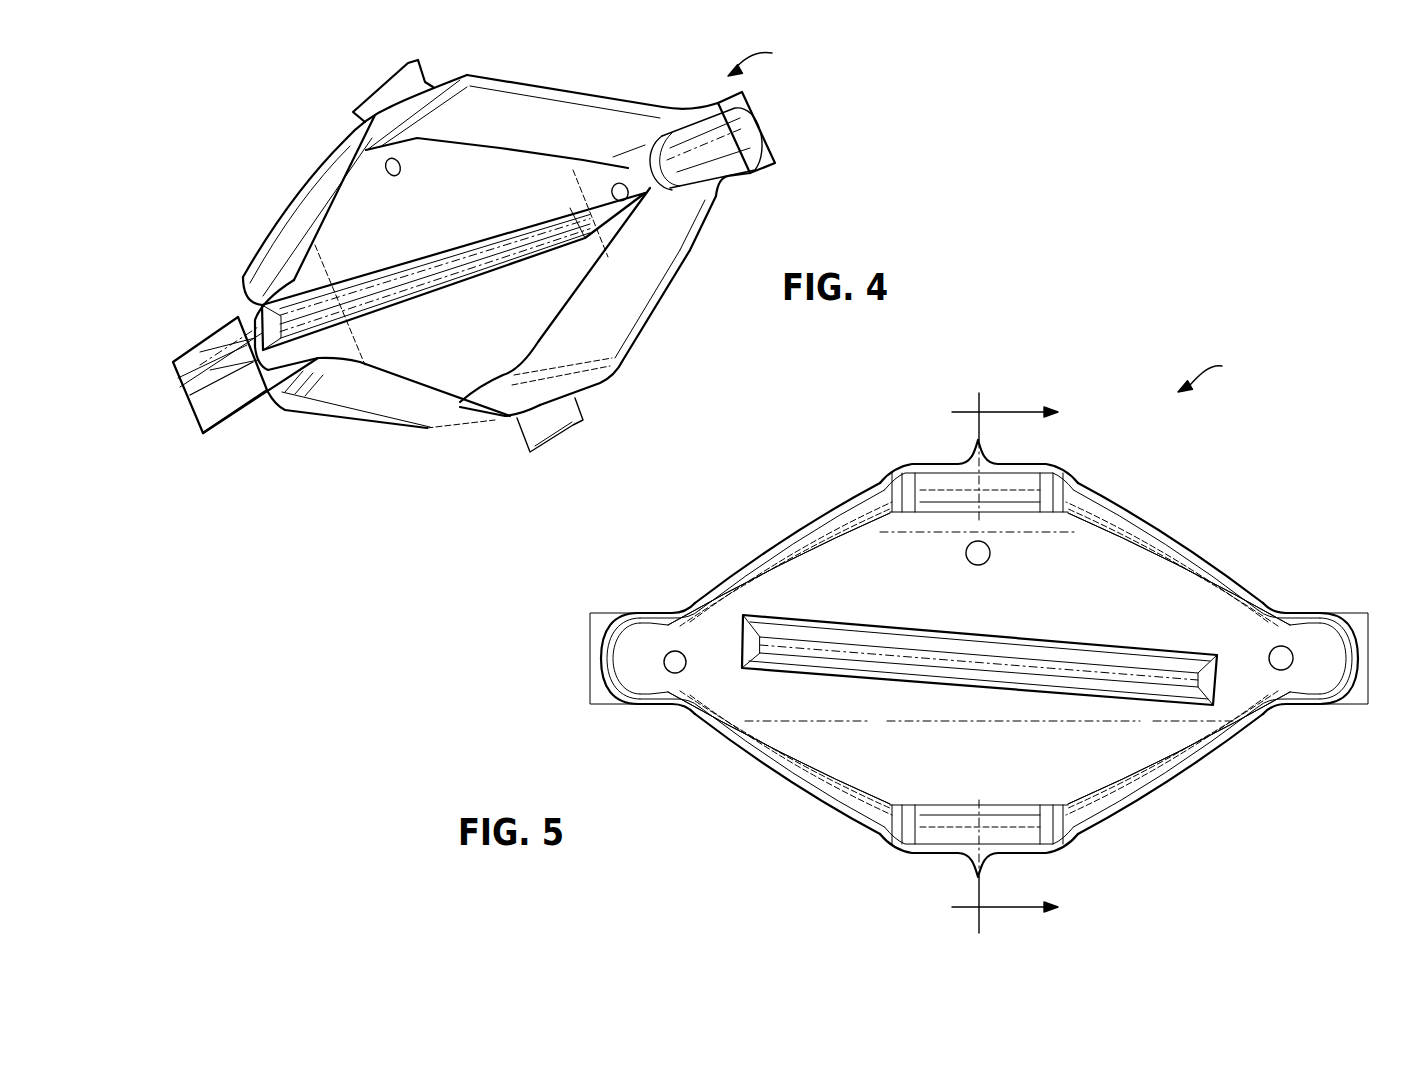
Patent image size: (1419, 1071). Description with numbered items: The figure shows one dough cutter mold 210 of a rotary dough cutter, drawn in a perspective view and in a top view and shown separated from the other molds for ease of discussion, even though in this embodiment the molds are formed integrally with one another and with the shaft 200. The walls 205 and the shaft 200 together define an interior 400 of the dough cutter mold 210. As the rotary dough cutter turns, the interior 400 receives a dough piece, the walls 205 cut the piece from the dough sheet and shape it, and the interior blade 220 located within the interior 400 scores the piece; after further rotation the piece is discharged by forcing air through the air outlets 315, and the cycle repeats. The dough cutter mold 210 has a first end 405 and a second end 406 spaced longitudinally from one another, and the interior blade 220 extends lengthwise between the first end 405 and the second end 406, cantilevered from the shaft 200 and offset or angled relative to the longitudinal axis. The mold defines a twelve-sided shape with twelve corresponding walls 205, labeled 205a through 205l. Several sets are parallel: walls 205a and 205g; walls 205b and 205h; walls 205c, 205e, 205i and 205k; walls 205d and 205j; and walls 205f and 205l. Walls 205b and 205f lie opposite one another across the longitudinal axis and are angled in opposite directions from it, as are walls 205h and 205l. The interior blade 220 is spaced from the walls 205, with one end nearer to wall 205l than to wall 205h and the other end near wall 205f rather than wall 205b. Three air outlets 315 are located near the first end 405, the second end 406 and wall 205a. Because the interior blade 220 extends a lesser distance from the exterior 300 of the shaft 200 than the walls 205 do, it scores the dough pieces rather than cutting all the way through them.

In FIG. 4, the shaft 200 is at (490, 185).
In FIG. 5, the shaft 200 is at (1118, 590).
In FIG. 4, the exterior of shaft 300 is at (490, 185).
In FIG. 5, the exterior of shaft 300 is at (1118, 590).
In FIG. 4, the dough cutter mold 210 is at (770, 60).
In FIG. 5, the dough cutter mold 210 is at (1220, 376).
In FIG. 4, the walls 205 is at (367, 408).
In FIG. 5, the walls 205 is at (1160, 790).
In FIG. 4, the wall 205a is at (437, 80).
In FIG. 5, the wall 205a is at (1013, 463).
In FIG. 4, the wall 205b is at (524, 64).
In FIG. 5, the wall 205b is at (1110, 503).
In FIG. 4, the wall 205c is at (714, 100).
In FIG. 5, the wall 205c is at (1318, 614).
In FIG. 4, the wall 205d is at (752, 116).
In FIG. 5, the wall 205d is at (1366, 655).
In FIG. 4, the wall 205e is at (750, 172).
In FIG. 5, the wall 205e is at (1310, 700).
In FIG. 4, the wall 205f is at (673, 276).
In FIG. 5, the wall 205f is at (1192, 762).
In FIG. 4, the wall 205g is at (597, 388).
In FIG. 5, the wall 205g is at (932, 858).
In FIG. 4, the wall 205h is at (420, 428).
In FIG. 5, the wall 205h is at (755, 757).
In FIG. 4, the wall 205i is at (288, 412).
In FIG. 5, the wall 205i is at (633, 705).
In FIG. 4, the wall 205j is at (262, 355).
In FIG. 5, the wall 205j is at (590, 640).
In FIG. 4, the wall 205k is at (243, 288).
In FIG. 5, the wall 205k is at (652, 615).
In FIG. 4, the wall 205l is at (334, 198).
In FIG. 5, the wall 205l is at (775, 548).
In FIG. 4, the interior blade 220 is at (498, 268).
In FIG. 5, the interior blade 220 is at (958, 686).
In FIG. 4, the air outlets 315 is at (401, 168).
In FIG. 5, the air outlets 315 is at (992, 553).
In FIG. 5, the interior 400 is at (815, 775).
In FIG. 4, the first end 405 is at (243, 337).
In FIG. 5, the first end 405 is at (590, 680).
In FIG. 4, the second end 406 is at (770, 138).
In FIG. 5, the second end 406 is at (1360, 705).